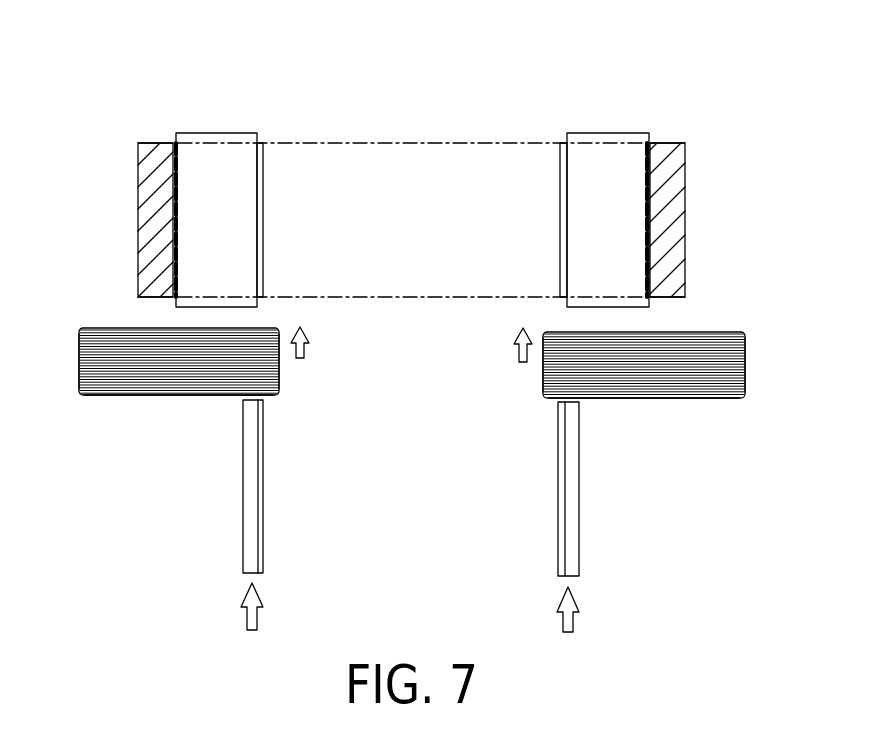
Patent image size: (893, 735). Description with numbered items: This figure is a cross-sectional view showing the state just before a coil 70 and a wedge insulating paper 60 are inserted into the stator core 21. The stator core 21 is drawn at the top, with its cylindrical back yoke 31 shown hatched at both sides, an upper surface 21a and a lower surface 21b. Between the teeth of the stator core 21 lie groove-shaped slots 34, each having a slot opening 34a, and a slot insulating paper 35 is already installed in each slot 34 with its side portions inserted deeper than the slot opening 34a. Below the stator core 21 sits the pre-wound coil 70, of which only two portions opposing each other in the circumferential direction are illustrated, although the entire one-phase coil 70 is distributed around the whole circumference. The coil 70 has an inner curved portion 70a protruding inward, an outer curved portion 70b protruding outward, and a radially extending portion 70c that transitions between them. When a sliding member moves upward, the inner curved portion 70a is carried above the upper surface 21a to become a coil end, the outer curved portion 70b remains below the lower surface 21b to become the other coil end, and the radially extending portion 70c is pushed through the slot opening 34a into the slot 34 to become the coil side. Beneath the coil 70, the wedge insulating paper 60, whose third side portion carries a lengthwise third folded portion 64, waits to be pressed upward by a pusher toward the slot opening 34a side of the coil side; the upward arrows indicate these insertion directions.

The stator core 21 is at (417, 182).
The upper surface of the stator core 21a is at (147, 142).
The lower surface of the stator core 21b is at (146, 297).
The back yoke 31 is at (162, 148).
The slot 34 is at (176, 183).
The slot opening 34a is at (262, 163).
The slot insulating paper 35 is at (235, 153).
The wedge insulating paper 60 is at (452, 488).
The third folded portion 64 is at (263, 502).
The coil 70 is at (410, 367).
The inner curved portion 70a is at (279, 375).
The outer curved portion 70b is at (79, 362).
The radially extending portion 70c is at (133, 396).